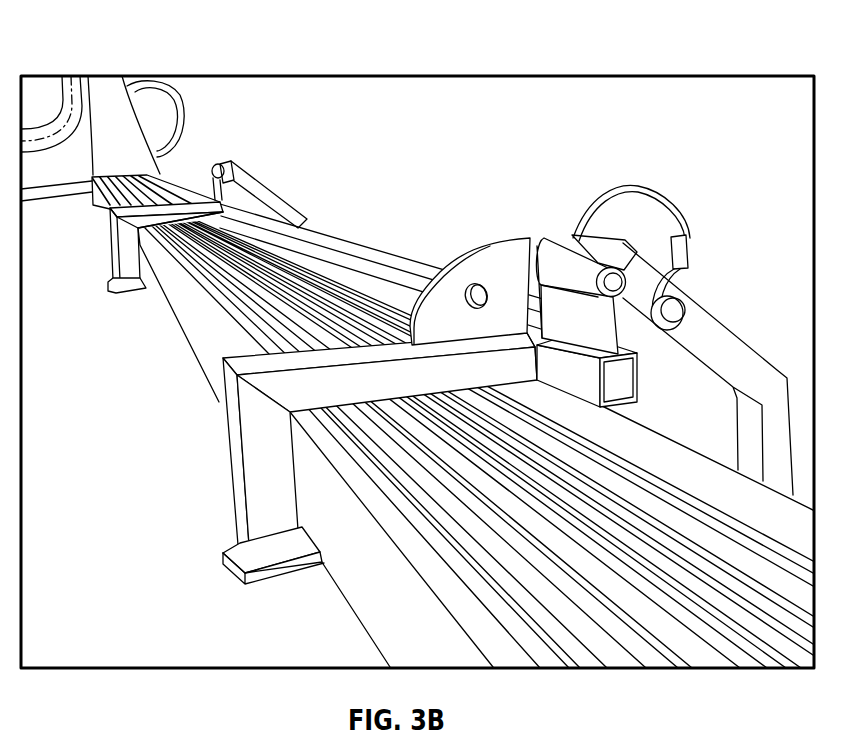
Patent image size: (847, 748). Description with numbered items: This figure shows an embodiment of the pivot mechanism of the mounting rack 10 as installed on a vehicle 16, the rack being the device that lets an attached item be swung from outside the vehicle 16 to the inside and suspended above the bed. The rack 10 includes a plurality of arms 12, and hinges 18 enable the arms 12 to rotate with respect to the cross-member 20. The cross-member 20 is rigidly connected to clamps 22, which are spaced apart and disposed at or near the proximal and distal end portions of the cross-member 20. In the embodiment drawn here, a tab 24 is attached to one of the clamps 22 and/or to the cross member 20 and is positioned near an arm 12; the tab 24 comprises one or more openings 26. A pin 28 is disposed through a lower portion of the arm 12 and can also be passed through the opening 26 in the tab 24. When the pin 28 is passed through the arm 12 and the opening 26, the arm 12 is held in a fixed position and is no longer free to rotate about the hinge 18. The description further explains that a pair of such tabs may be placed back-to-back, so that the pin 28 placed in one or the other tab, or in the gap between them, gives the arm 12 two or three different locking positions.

The rack 10 is at (529, 103).
The arms 12 is at (767, 373).
The vehicle 16 is at (103, 82).
The hinges 18 is at (555, 262).
The cross-member 20 is at (353, 252).
The clamps 22 is at (214, 476).
The tab 24 is at (508, 250).
The opening 26 is at (474, 288).
The pin 28 is at (682, 307).